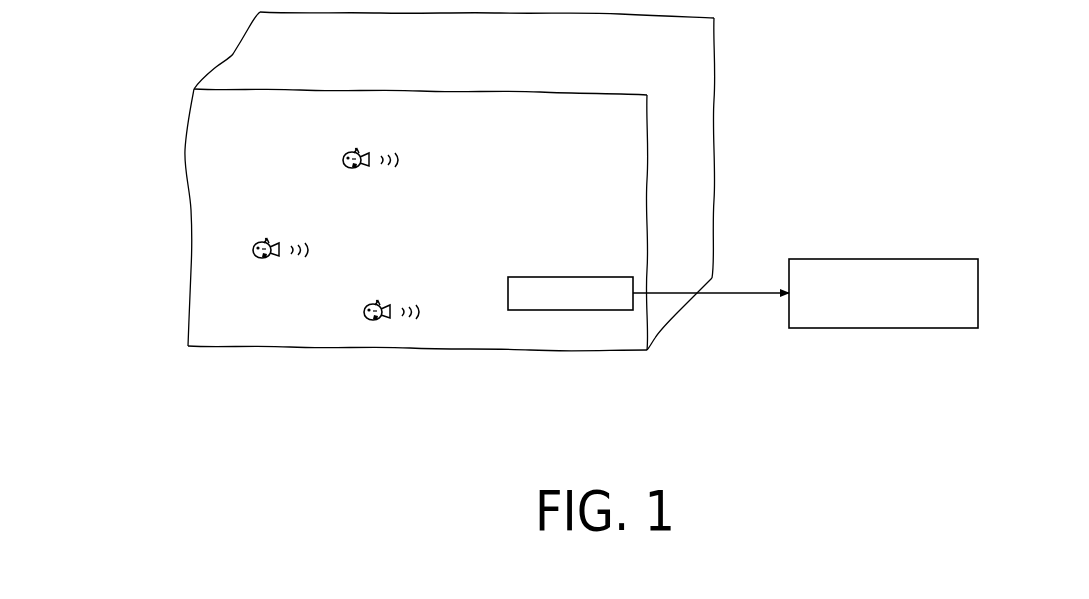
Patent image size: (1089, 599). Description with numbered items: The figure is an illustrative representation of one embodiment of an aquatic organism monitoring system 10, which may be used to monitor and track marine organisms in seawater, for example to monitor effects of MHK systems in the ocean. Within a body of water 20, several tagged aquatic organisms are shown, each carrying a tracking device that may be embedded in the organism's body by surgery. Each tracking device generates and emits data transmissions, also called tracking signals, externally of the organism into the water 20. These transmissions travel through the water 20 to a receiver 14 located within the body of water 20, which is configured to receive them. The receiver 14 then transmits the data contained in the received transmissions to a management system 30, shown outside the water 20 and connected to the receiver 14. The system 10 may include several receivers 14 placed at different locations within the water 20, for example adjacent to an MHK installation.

The aquatic organism monitoring system 10 is at (549, 272).
The receiver 14 is at (548, 310).
The body of water 20 is at (615, 156).
The management system 30 is at (978, 290).